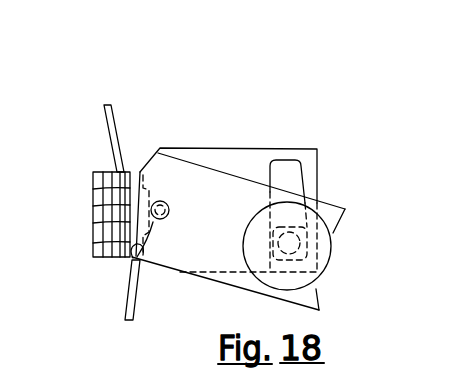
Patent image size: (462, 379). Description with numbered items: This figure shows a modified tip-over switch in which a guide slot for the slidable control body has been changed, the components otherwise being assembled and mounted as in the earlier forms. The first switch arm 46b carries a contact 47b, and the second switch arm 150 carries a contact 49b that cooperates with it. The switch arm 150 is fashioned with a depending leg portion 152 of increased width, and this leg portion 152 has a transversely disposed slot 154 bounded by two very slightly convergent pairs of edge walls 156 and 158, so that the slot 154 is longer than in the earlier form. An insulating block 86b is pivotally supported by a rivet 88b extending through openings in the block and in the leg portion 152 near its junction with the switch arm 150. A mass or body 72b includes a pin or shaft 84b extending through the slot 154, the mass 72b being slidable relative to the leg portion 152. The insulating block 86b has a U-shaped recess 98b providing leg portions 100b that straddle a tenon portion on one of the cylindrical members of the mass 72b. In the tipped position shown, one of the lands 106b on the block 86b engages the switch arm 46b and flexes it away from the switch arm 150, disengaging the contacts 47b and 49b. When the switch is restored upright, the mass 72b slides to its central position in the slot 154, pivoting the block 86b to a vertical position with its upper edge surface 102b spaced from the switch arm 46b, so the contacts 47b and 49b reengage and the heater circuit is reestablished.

The depending leg portion 152 is at (239, 148).
The leg portions 100b is at (346, 204).
The upper edge surface 102b is at (93, 189).
The second switch arm 150 is at (122, 262).
The contact 47b is at (122, 185).
The switch arm 46b is at (122, 207).
The land 106b is at (125, 240).
The edge walls 156 is at (300, 164).
The slot 154 is at (287, 180).
The mass 72b is at (236, 255).
The edge walls 158 is at (302, 237).
The pin 84b is at (235, 254).
The U-shaped recess 98b is at (327, 280).
The contact 49b is at (147, 196).
The rivet 88b is at (170, 211).
The insulating block 86b is at (221, 286).